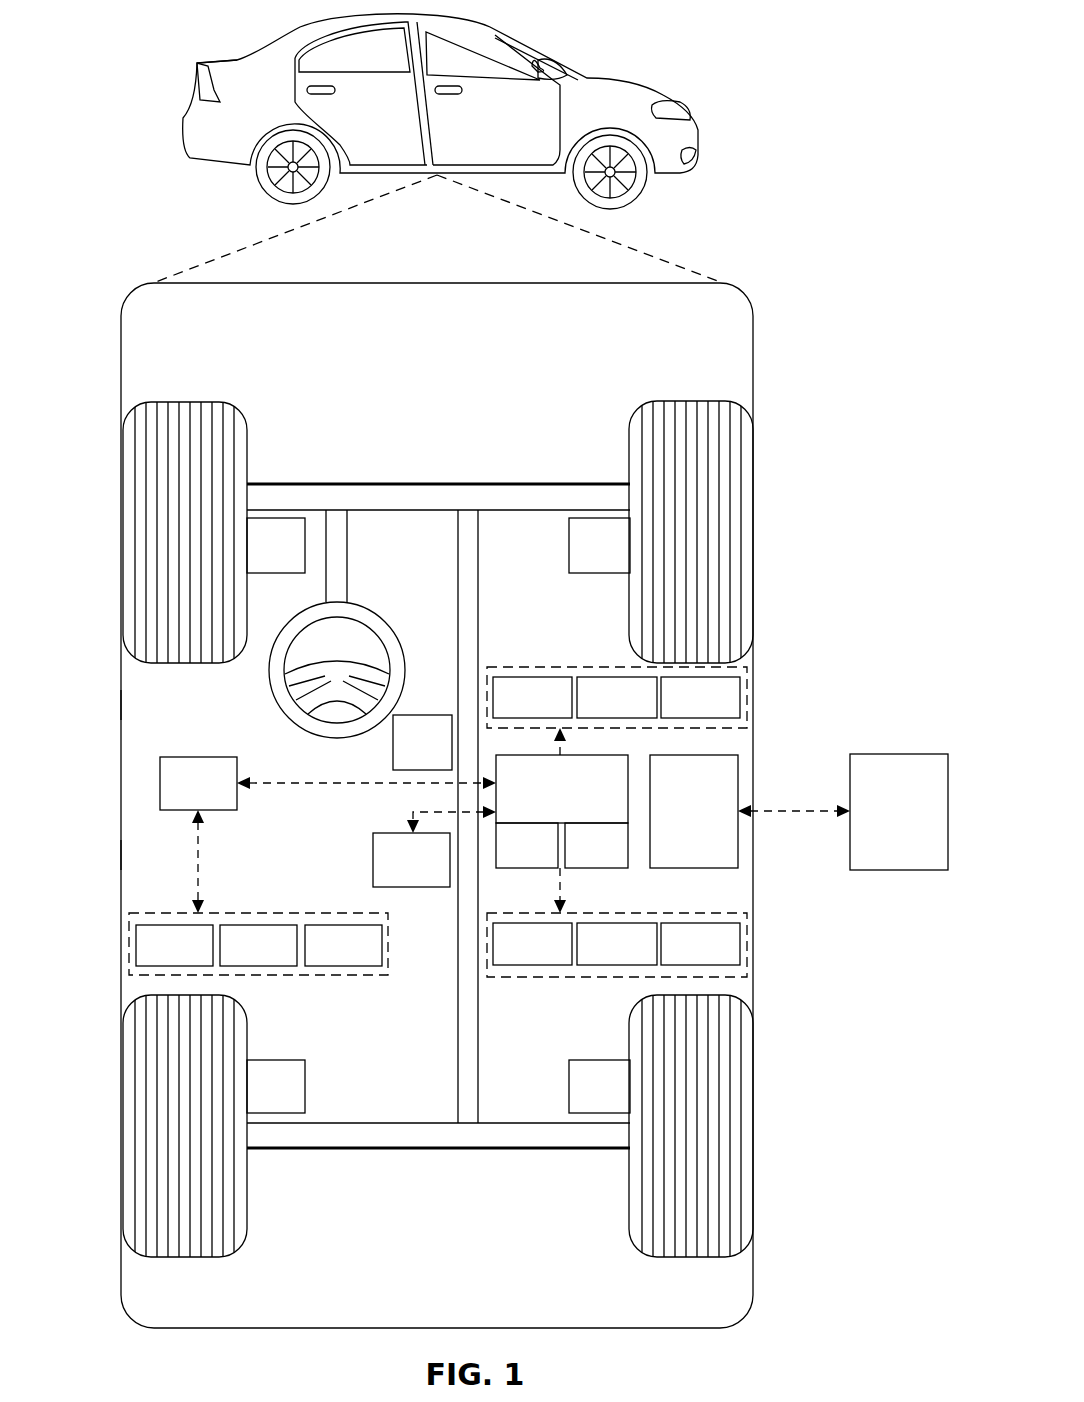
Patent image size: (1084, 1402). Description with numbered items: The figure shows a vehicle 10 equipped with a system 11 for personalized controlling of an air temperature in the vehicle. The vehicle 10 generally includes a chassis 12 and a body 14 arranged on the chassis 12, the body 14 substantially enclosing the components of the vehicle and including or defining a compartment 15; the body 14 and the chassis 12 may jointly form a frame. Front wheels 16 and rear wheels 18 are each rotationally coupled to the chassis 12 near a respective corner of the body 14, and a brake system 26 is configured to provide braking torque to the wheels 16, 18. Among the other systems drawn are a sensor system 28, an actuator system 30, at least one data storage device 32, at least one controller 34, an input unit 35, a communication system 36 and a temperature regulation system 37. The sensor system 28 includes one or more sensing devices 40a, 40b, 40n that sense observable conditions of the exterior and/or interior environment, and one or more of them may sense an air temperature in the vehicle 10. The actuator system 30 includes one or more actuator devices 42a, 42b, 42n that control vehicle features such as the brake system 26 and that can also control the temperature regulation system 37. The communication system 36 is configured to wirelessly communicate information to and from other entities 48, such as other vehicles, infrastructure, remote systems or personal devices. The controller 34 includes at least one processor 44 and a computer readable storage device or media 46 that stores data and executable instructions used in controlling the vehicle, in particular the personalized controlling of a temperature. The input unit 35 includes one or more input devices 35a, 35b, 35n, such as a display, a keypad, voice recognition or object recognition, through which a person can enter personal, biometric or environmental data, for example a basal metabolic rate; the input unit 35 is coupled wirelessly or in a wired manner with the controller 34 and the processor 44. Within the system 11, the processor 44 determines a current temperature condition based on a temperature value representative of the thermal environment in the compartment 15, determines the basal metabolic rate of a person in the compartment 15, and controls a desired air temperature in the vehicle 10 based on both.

The vehicle 10 is at (182, 116).
The system for personalized controlling of an air temperature 11 is at (137, 855).
The chassis 12 is at (458, 1038).
The body 14 is at (121, 782).
The compartment 15 is at (137, 710).
The front wheels 16 is at (185, 401).
The rear wheels 18 is at (187, 1258).
The brake system 26 is at (262, 559).
The sensor system 28 is at (572, 667).
The actuator system 30 is at (578, 978).
The data storage device 32 is at (397, 874).
The controller 34 is at (548, 803).
The input unit 35 is at (184, 797).
The input device 35a is at (153, 959).
The input device 35b is at (237, 959).
The input device 35n is at (322, 959).
The communication system 36 is at (680, 824).
The temperature regulation system 37 is at (408, 756).
The sensing device 40a is at (511, 711).
The sensing device 40b is at (596, 711).
The sensing device 40n is at (679, 711).
The actuator device 42a is at (511, 957).
The actuator device 42b is at (596, 957).
The actuator device 42n is at (679, 957).
The processor 44 is at (513, 859).
The computer readable storage device or media 46 is at (582, 859).
The other entities 48 is at (885, 824).